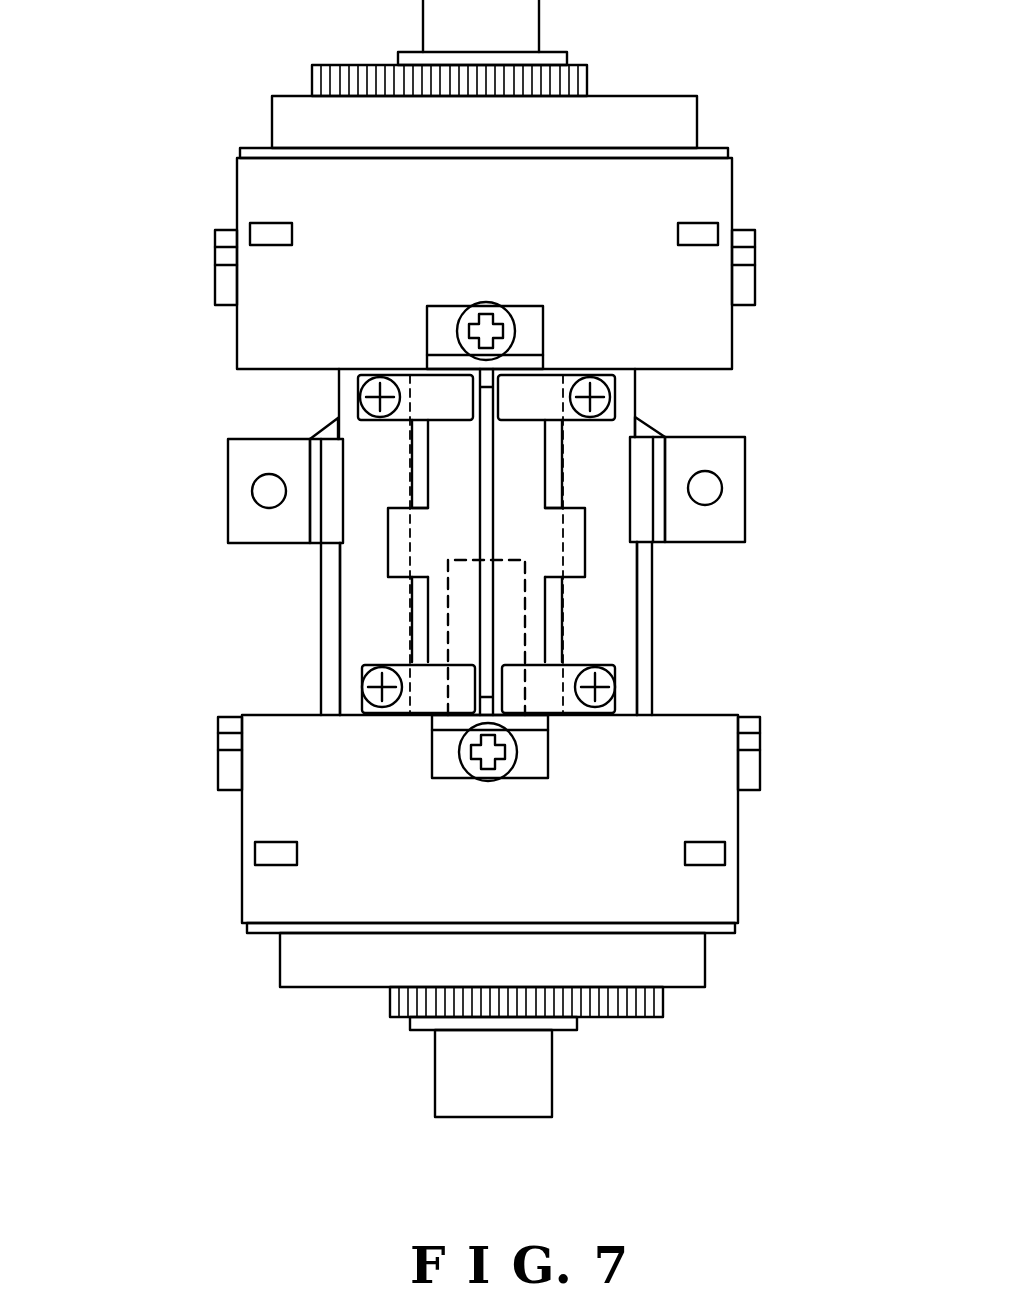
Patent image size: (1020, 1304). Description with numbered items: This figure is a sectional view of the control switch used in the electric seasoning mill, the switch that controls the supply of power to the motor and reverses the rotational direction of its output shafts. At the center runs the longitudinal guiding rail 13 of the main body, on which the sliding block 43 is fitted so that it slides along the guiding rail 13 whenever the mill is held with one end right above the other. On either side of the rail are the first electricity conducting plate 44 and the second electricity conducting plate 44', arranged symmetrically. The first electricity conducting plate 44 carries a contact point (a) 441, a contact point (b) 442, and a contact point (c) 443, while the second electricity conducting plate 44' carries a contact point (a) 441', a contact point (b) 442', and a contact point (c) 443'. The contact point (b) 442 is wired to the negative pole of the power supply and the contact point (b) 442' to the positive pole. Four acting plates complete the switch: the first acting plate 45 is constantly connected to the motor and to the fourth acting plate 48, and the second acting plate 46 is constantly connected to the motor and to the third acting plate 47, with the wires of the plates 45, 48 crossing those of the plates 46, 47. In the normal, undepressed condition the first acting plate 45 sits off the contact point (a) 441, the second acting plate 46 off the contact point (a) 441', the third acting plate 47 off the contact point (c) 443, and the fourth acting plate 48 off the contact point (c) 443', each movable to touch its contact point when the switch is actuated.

The longitudinal guiding rail 13 is at (490, 490).
The sliding block 43 is at (455, 608).
The first electricity conducting plate 44 is at (234, 542).
The second electricity conducting plate 44' is at (680, 542).
The first acting plate 45 is at (440, 680).
The second acting plate 46 is at (543, 680).
The third acting plate 47 is at (432, 408).
The fourth acting plate 48 is at (543, 403).
The contact point (a) 441 is at (266, 744).
The contact point (a) 441' is at (691, 740).
The contact point (b) 442 is at (247, 542).
The contact point (b) 442' is at (717, 545).
The contact point (c) 443 is at (277, 370).
The contact point (c) 443' is at (697, 360).